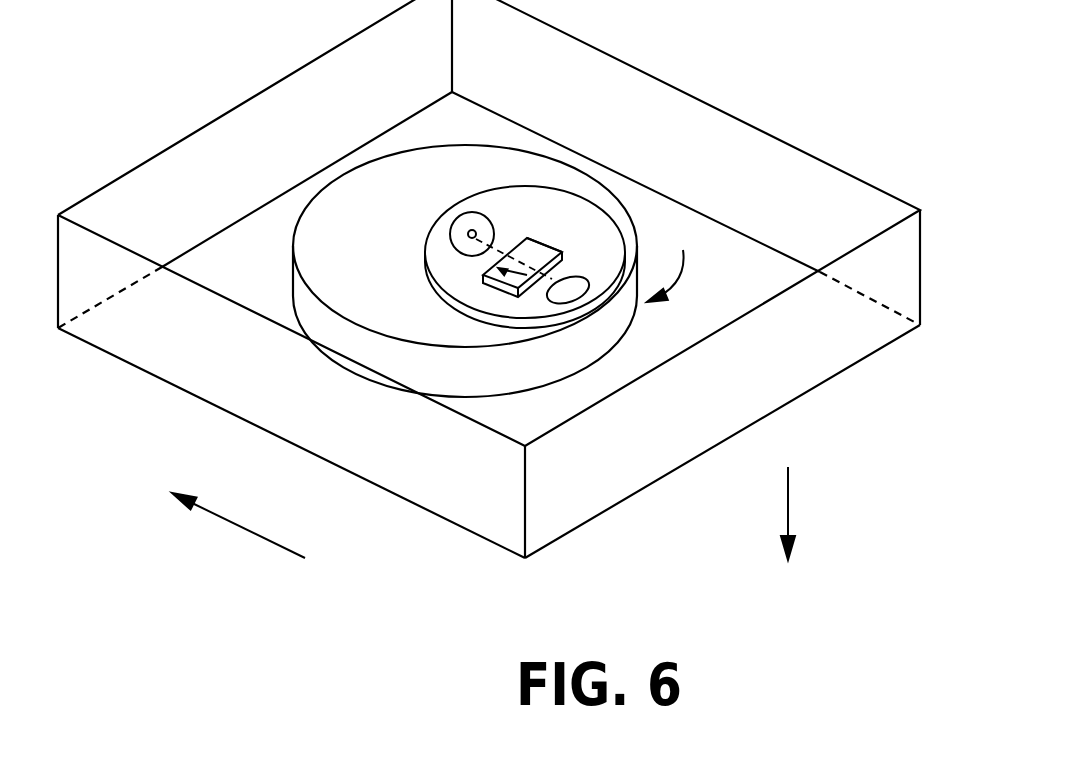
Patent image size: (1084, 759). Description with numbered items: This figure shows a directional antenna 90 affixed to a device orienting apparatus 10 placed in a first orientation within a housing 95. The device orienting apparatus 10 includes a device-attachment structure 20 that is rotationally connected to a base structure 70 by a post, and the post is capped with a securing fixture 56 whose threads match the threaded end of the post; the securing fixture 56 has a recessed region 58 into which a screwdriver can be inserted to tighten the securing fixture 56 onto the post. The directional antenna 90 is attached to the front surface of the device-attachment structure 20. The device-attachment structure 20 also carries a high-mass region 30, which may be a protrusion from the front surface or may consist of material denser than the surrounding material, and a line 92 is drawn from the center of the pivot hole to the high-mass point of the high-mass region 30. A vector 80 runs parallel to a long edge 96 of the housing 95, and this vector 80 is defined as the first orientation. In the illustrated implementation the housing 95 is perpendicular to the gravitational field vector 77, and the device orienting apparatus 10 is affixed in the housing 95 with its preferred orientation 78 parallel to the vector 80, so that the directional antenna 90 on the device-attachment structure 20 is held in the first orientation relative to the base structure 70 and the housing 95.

The device orienting apparatus 10 is at (670, 260).
The device-attachment structure 20 is at (440, 257).
The high-mass region 30 is at (567, 280).
The securing fixture 56 is at (447, 237).
The recessed region 58 is at (473, 229).
The base structure 70 is at (512, 370).
The gravitational field vector 77 is at (789, 513).
The preferred orientation 78 is at (497, 285).
The vector 80 is at (222, 520).
The directional antenna 90 is at (540, 248).
The line 92 is at (530, 236).
The housing 95 is at (855, 337).
The long edge 96 is at (374, 487).